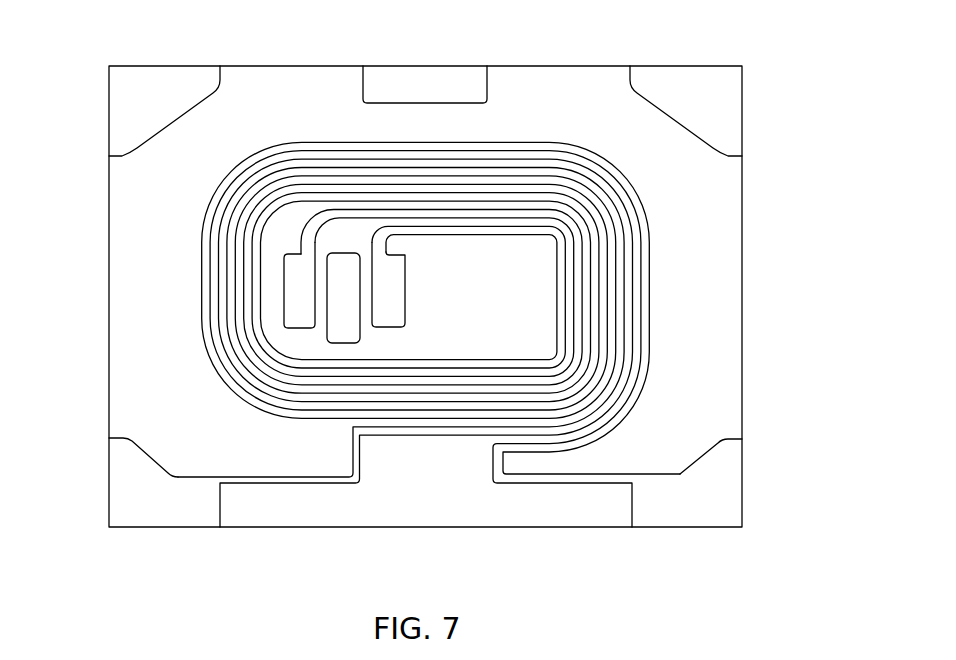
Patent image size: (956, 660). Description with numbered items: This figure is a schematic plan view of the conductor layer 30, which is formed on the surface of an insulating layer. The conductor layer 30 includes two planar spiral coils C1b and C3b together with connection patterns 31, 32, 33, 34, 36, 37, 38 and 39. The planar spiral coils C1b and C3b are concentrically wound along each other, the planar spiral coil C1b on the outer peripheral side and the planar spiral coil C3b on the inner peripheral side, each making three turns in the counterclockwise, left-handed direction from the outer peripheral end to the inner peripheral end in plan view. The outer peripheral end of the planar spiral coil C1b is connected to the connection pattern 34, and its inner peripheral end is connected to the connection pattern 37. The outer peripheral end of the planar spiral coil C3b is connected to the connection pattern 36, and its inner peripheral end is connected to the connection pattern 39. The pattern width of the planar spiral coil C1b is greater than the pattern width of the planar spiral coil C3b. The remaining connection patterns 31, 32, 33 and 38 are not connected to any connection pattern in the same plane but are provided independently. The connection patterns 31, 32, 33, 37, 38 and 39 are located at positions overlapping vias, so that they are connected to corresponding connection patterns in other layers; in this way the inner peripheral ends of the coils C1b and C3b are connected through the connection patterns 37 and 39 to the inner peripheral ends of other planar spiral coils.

The conductor layer 30 is at (713, 23).
The connection pattern 31 is at (722, 103).
The connection pattern 32 is at (422, 86).
The connection pattern 33 is at (131, 98).
The connection pattern 34 is at (720, 497).
The connection pattern 36 is at (131, 491).
The connection pattern 37 is at (296, 308).
The connection pattern 38 is at (350, 322).
The connection pattern 39 is at (392, 298).
The planar spiral coil C1b is at (645, 282).
The planar spiral coil C3b is at (627, 307).